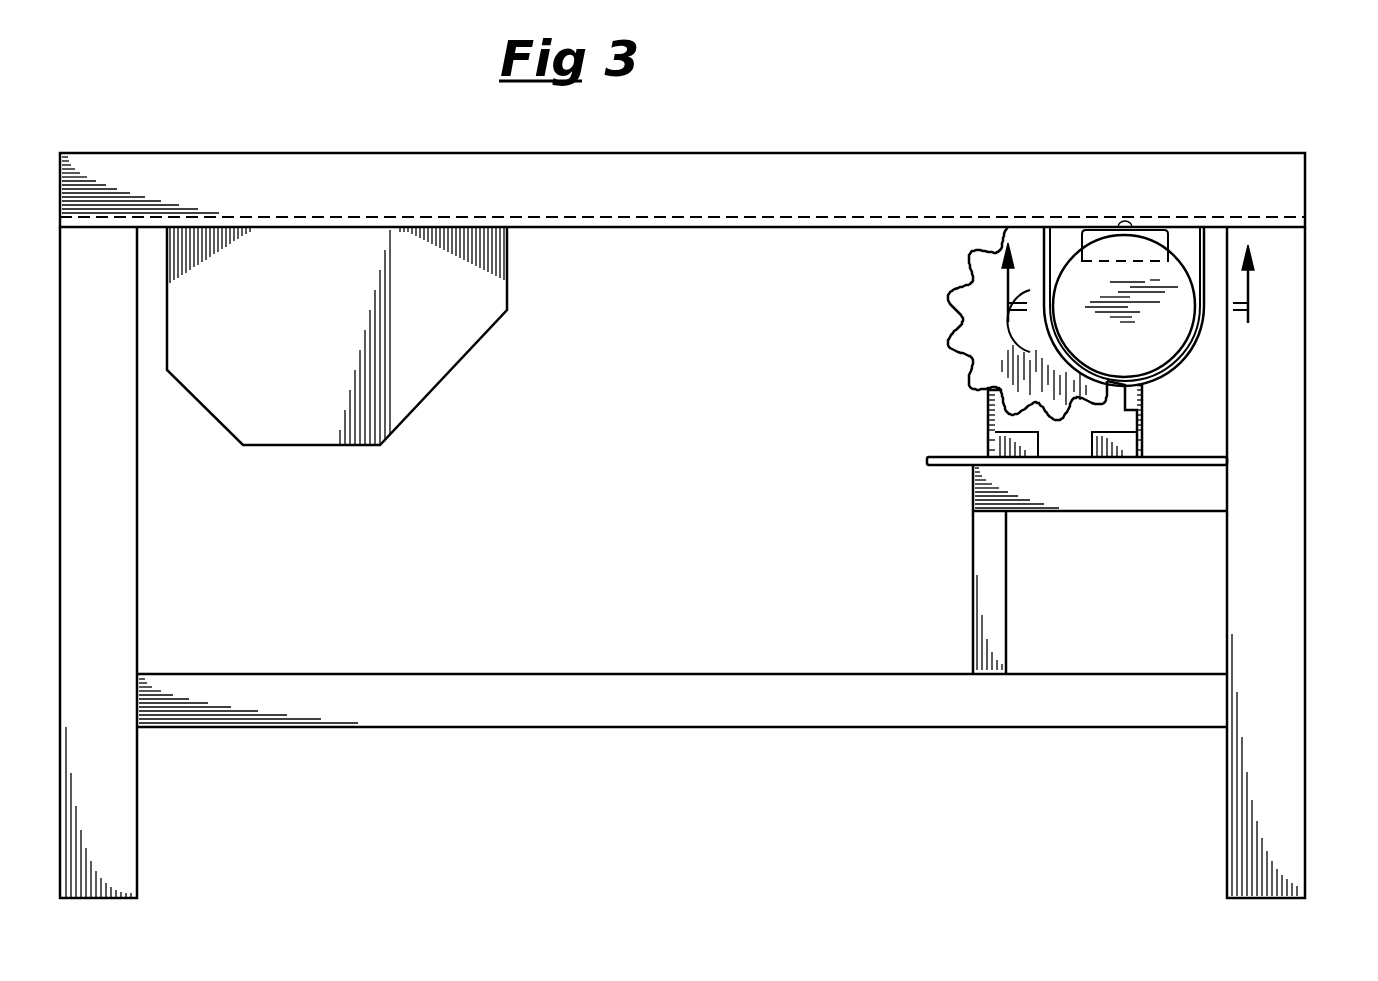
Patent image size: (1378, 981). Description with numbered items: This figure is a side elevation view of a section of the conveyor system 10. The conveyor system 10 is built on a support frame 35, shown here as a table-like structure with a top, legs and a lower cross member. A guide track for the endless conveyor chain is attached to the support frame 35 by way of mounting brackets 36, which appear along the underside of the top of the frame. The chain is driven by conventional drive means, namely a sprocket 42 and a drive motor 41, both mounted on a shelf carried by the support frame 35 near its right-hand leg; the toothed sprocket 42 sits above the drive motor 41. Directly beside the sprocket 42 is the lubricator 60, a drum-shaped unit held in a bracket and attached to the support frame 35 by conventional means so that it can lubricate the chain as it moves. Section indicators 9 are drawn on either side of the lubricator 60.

The section line 9- 9 is at (1125, 283).
The conveyor system 10 is at (905, 327).
The support frame 35 is at (1290, 380).
The mounting brackets 36 is at (1104, 162).
The drive motor 41 is at (988, 408).
The sprocket 42 is at (975, 342).
The lubricator 60 is at (1153, 356).